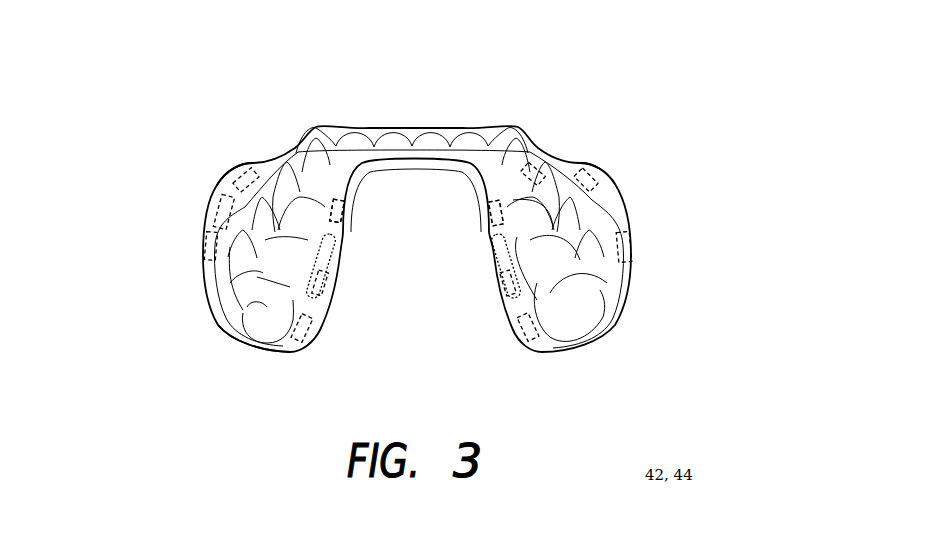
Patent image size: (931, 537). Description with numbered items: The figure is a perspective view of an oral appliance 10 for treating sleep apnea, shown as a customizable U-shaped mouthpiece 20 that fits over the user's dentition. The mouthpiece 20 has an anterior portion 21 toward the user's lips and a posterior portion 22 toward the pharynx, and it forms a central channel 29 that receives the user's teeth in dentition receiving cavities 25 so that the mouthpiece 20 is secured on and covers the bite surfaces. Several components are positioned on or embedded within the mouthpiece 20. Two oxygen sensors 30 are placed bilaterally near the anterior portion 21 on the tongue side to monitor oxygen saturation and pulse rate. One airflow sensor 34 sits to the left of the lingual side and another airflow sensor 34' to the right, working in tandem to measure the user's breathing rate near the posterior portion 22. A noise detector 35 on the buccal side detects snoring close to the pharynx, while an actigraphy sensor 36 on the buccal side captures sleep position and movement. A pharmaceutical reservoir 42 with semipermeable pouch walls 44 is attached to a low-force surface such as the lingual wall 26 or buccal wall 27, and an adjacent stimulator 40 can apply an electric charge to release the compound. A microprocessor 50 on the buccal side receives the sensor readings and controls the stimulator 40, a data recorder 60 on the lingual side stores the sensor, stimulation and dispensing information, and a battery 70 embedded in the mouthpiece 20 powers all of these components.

The oral appliance 10 is at (497, 67).
The mouthpiece 20 is at (560, 147).
The anterior portion 21 is at (395, 116).
The posterior portion 22 is at (342, 346).
The dentition receiving cavities 25 is at (256, 307).
The lingual wall 26 is at (493, 275).
The buccal wall 27 is at (216, 166).
The central channel 29 is at (268, 328).
The oxygen sensor 30 is at (489, 218).
The airflow sensor 34 is at (334, 326).
The airflow sensor 34' is at (498, 333).
The noise detector 35 is at (524, 163).
The actigraphy sensor 36 is at (214, 207).
The stimulator 40 is at (323, 288).
The pharmaceutical reservoir 42 is at (342, 230).
The pouch walls 44 is at (491, 225).
The microprocessor 50 is at (204, 247).
The data recorder 60 is at (633, 247).
The battery 70 is at (240, 174).